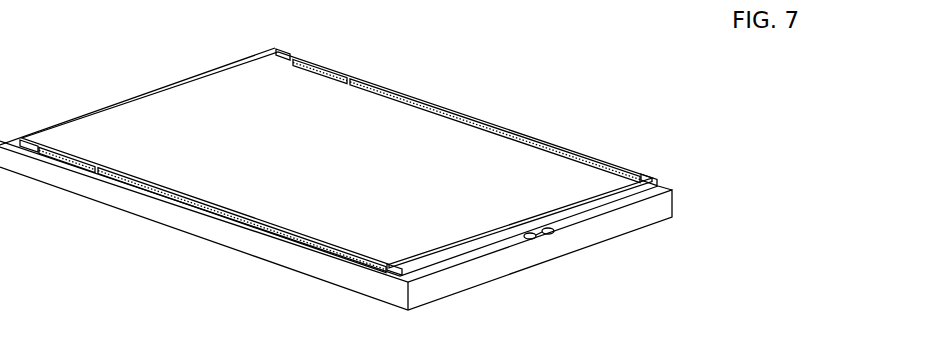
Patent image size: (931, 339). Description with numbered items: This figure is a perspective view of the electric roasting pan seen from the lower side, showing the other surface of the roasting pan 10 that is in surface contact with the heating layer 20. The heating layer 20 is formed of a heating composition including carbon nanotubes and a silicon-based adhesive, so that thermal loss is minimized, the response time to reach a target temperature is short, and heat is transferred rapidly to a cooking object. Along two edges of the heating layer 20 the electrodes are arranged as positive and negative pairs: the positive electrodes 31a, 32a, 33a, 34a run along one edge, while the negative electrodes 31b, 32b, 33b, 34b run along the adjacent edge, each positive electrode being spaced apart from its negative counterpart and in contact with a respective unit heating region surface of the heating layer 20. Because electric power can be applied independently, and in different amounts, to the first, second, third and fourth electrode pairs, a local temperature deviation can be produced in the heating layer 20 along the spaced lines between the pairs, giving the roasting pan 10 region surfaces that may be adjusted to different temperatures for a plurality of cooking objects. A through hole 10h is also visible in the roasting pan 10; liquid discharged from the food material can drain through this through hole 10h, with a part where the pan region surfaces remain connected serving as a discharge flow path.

The roasting pan 10 is at (218, 233).
The through hole 10h is at (540, 239).
The heating layer 20 is at (152, 127).
The first unit electrode (positive electrode) 31a is at (292, 51).
The second unit electrode (positive electrode) 32a is at (347, 76).
The third unit electrode (positive electrode) 33a is at (443, 109).
The fourth unit electrode (positive electrode) 34a is at (660, 172).
The first unit electrode (negative electrode) 31b is at (33, 140).
The second unit electrode (negative electrode) 32b is at (65, 160).
The third unit electrode (negative electrode) 33b is at (263, 227).
The fourth unit electrode (negative electrode) 34b is at (388, 271).